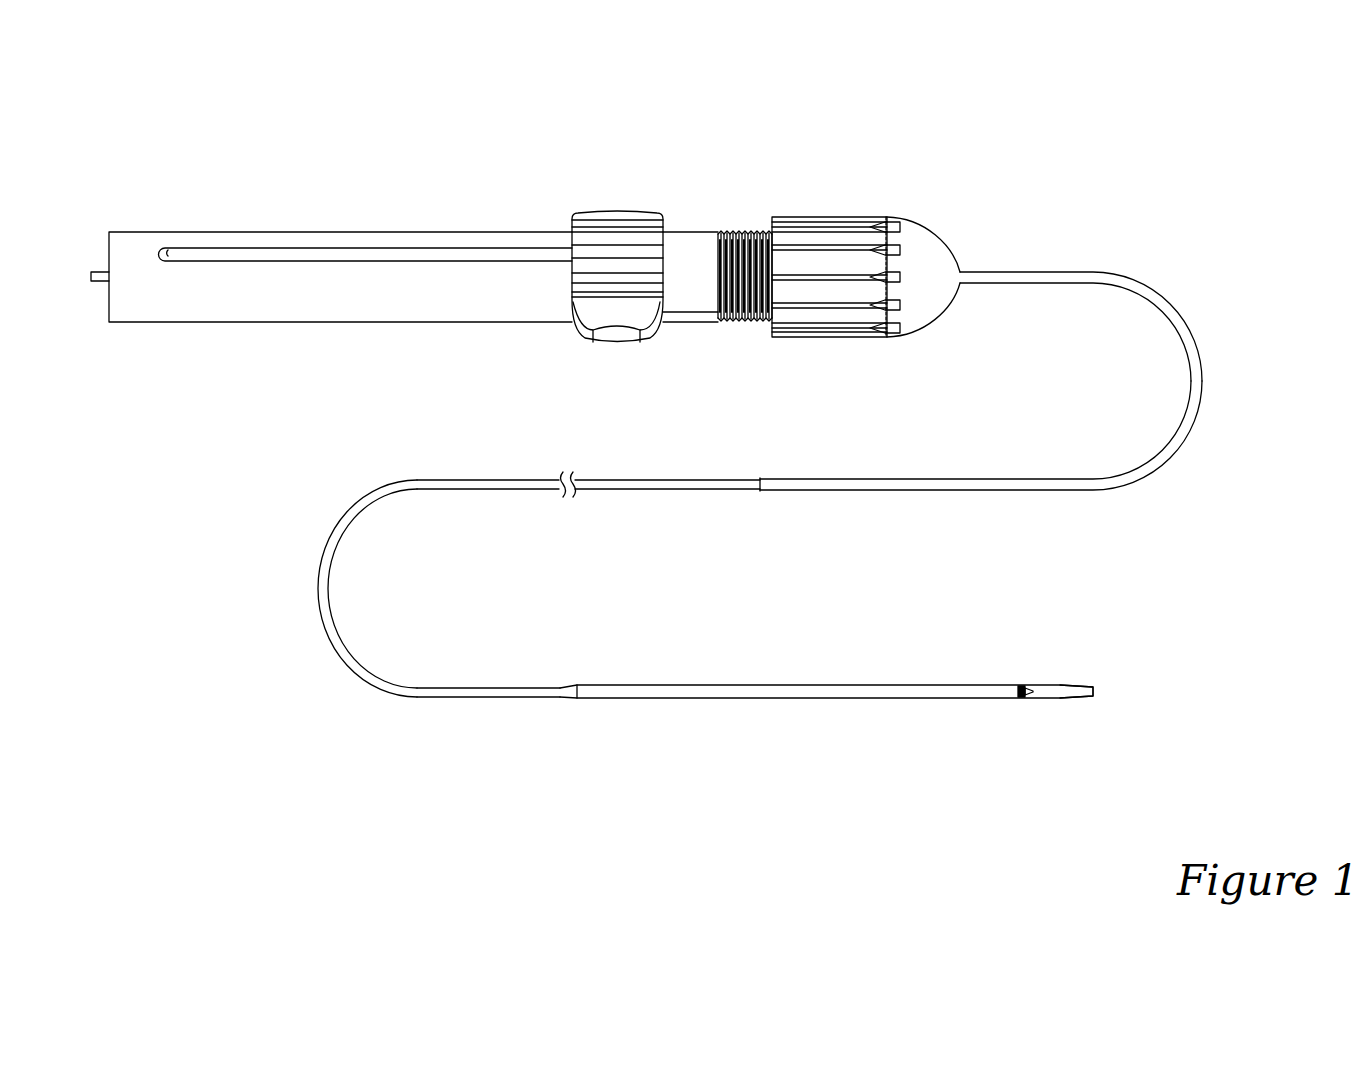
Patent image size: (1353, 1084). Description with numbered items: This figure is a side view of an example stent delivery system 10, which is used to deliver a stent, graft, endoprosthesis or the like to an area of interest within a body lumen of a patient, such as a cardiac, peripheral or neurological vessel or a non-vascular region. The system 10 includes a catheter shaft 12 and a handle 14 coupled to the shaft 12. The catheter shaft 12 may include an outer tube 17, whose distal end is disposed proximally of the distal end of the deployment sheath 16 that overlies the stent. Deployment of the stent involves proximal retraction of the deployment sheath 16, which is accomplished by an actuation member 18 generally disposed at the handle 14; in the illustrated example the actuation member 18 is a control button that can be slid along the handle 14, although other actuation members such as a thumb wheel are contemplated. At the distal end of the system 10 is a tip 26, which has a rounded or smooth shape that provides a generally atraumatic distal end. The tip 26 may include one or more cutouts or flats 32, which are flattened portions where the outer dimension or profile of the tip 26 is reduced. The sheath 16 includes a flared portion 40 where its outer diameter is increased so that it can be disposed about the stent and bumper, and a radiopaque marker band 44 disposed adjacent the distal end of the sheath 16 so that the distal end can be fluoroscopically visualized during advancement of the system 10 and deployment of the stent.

The stent delivery system 10 is at (795, 151).
The catheter shaft 12 is at (1182, 307).
The handle 14 is at (351, 203).
The deployment sheath 16 is at (347, 519).
The outer tube 17 is at (1188, 437).
The actuation member 18 is at (586, 212).
The tip 26 is at (1057, 685).
The flats 32 is at (1030, 698).
The flared portion 40 is at (804, 700).
The marker band 44 is at (1021, 685).